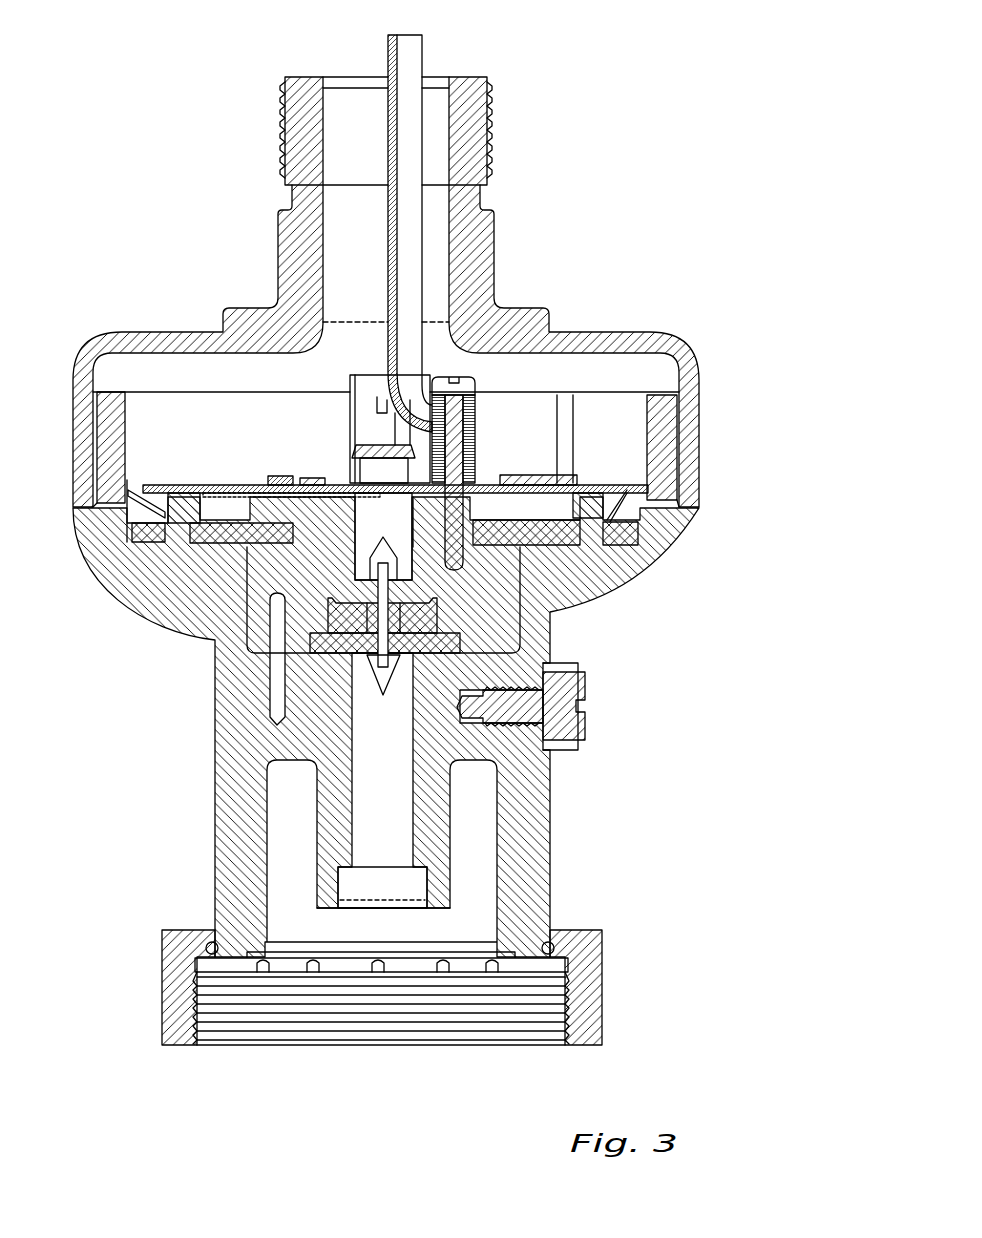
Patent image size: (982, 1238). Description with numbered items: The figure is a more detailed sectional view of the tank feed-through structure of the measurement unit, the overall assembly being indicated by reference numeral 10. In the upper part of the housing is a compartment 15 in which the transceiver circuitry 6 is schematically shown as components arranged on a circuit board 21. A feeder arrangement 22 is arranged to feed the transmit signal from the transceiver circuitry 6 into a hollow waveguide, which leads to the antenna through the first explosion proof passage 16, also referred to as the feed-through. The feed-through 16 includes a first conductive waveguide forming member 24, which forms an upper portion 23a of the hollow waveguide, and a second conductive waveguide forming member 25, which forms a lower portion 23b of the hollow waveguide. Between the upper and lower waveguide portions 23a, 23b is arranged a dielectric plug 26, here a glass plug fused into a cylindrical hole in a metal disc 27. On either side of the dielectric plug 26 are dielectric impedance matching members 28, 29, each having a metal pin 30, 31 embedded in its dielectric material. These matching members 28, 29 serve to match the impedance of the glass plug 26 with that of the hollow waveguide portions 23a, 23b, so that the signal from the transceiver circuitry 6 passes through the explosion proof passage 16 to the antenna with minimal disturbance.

The transceiver circuitry 6 is at (283, 476).
The valve assembly 10 is at (620, 228).
The compartment 15 is at (208, 451).
The first explosion proof passage 16 is at (700, 507).
The circuit board 21 is at (160, 486).
The feeder arrangement 22 is at (237, 495).
The upper portion of the hollow waveguide 23a is at (405, 534).
The lower portion of the hollow waveguide 23b is at (404, 792).
The first conductive waveguide forming member 24 is at (510, 640).
The second conductive waveguide forming member 25 is at (240, 755).
The dielectric plug 26 is at (377, 625).
The metal disc 27 is at (340, 617).
The dielectric impedance matching member 28 is at (405, 540).
The dielectric impedance matching member 29 is at (452, 700).
The metal pin 30 is at (390, 578).
The metal pin 31 is at (400, 665).